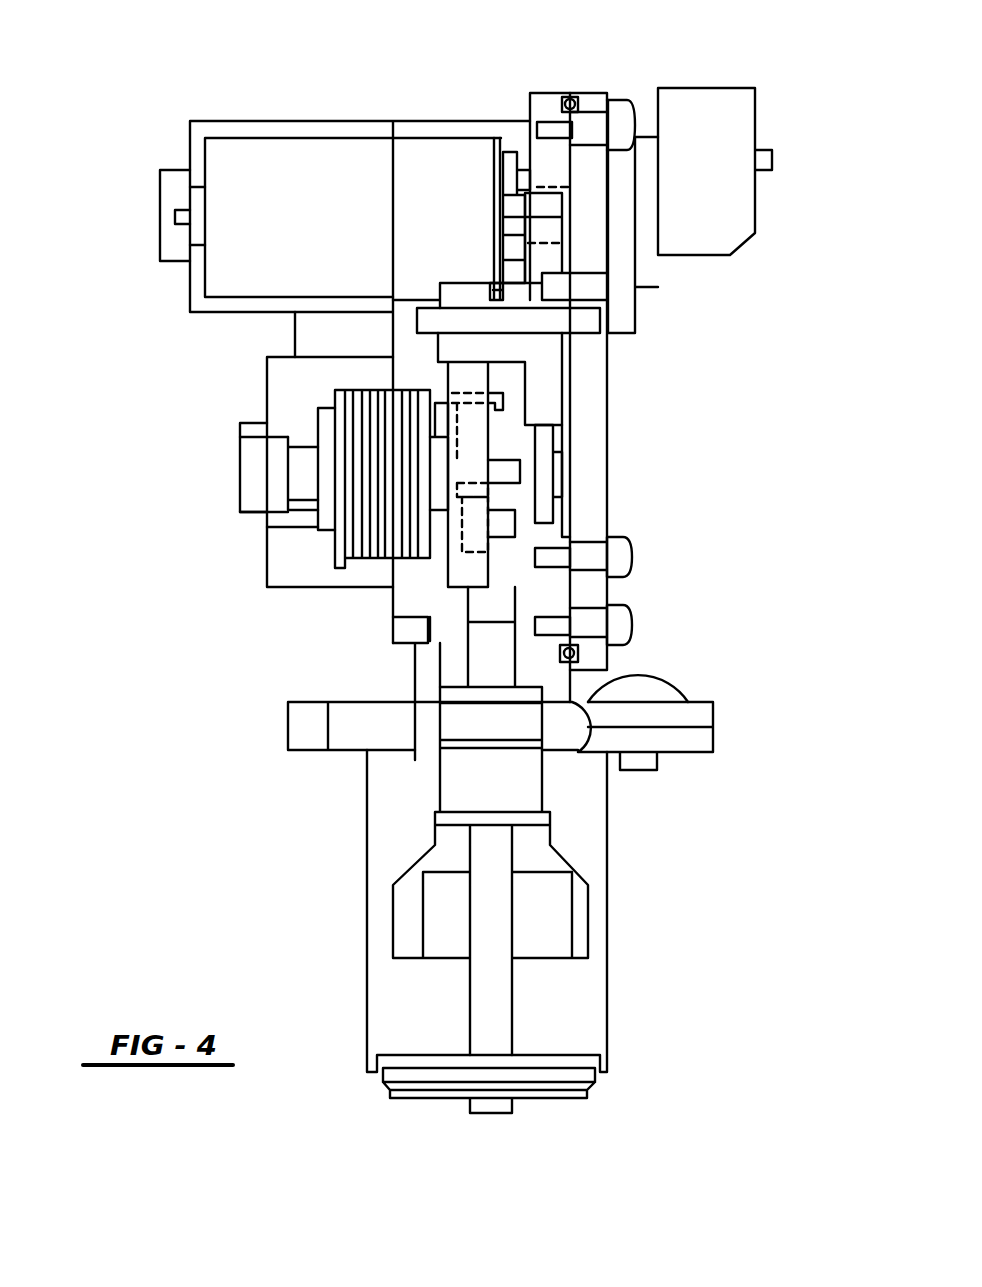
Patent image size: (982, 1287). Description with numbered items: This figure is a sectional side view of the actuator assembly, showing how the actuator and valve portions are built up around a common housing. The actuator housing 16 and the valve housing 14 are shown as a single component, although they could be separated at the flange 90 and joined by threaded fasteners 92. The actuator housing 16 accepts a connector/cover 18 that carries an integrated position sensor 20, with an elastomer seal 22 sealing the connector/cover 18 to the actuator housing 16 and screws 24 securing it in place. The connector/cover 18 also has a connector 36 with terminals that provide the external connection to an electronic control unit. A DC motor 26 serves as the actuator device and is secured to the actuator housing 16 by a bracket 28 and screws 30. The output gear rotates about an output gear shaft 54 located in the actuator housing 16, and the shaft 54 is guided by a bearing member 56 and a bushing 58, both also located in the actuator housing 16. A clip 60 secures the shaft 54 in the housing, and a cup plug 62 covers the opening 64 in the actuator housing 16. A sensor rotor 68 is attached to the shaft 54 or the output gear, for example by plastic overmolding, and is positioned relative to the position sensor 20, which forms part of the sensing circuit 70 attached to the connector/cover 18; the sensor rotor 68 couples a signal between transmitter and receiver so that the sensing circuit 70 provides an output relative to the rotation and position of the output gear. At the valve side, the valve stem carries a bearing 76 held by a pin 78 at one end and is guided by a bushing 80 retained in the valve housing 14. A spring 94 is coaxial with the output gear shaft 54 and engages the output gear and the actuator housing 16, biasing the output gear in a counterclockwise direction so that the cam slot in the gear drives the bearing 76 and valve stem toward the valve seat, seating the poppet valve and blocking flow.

The valve housing 14 is at (380, 792).
The actuator housing 16 is at (208, 120).
The connector/cover 18 is at (608, 350).
The position sensor 20 is at (558, 483).
The elastomer seal 22 is at (573, 100).
The screws 24 is at (633, 128).
The DC motor 26 is at (323, 138).
The bracket 28 is at (502, 138).
The screws 30 is at (517, 152).
The connector 36 is at (728, 125).
The output gear shaft 54 is at (303, 493).
The bearing member 56 is at (327, 523).
The bushing 58 is at (302, 440).
The clip 60 is at (278, 492).
The cup plug 62 is at (245, 468).
The opening 64 is at (248, 445).
The sensor rotor 68 is at (547, 470).
The sensing circuit 70 is at (570, 378).
The bearing 76 is at (472, 533).
The pin 78 is at (507, 538).
The bushing 80 is at (523, 782).
The flange 90 is at (305, 728).
The threaded fasteners 92 is at (663, 677).
The spring 94 is at (368, 393).